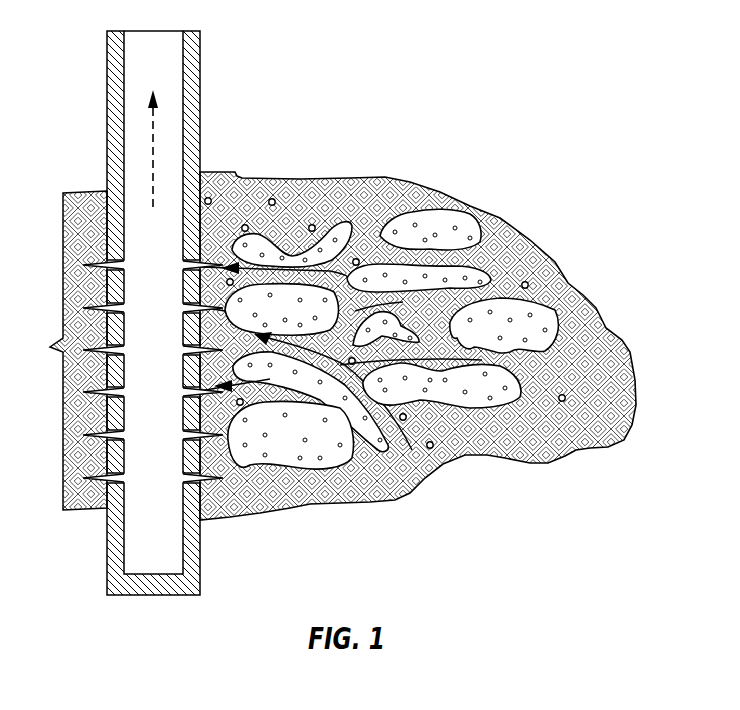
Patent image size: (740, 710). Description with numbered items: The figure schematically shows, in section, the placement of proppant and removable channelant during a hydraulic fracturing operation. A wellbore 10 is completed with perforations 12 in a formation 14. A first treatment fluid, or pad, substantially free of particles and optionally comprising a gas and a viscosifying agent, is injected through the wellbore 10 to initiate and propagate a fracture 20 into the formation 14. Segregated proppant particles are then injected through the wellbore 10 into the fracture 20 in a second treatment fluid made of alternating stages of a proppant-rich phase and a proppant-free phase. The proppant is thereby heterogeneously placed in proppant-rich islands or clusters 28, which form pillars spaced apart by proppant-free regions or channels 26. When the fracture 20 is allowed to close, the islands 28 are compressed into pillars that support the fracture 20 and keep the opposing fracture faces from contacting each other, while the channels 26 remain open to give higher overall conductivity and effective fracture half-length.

The wellbore 10 is at (147, 522).
The perforations 12 is at (200, 478).
The formation 14 is at (395, 105).
The fracture 20 is at (482, 200).
The proppant-free regions or channels 26 is at (468, 356).
The proppant-rich islands or clusters 28 is at (485, 396).